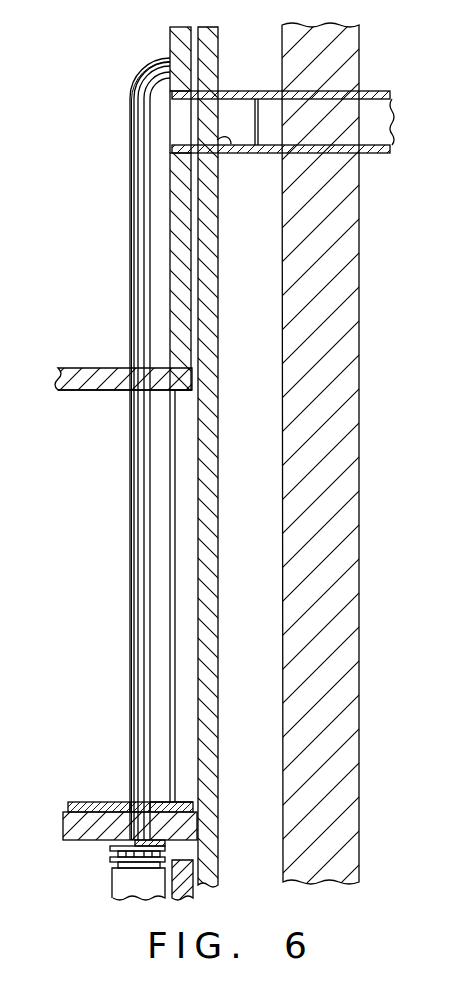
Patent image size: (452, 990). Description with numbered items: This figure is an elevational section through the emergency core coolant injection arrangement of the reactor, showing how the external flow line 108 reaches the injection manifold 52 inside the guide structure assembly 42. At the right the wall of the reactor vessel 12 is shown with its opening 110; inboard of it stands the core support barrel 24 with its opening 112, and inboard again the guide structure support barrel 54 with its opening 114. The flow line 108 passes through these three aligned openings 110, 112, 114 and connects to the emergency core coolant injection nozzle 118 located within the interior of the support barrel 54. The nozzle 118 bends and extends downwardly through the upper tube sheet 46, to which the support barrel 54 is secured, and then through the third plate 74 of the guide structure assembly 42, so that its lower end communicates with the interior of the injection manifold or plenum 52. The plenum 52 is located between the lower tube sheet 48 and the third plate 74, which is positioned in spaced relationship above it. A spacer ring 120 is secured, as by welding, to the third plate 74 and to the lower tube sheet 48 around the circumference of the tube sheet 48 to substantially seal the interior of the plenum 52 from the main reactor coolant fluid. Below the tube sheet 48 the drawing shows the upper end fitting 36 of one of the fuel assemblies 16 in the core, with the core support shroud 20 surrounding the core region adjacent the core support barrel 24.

The reactor vessel 12 is at (359, 265).
The fuel assemblies 16 is at (108, 896).
The core support shroud 20 is at (194, 890).
The core support barrel 24 is at (216, 285).
The upper end fitting 36 is at (112, 862).
The guide structure assembly 42 is at (93, 396).
The upper tube sheet 46 is at (91, 368).
The lower tube sheet 48 is at (73, 840).
The injection manifold 52 is at (68, 805).
The support barrel 54 is at (170, 45).
The third plate 74 is at (115, 802).
The flow line 108 is at (382, 90).
The opening in the vessel wall 110 is at (377, 153).
The opening in the core barrel 112 is at (217, 143).
The opening in the guide structure barrel 114 is at (182, 101).
The emergency core coolant injection nozzle 118 is at (130, 130).
The spacer ring 120 is at (193, 805).